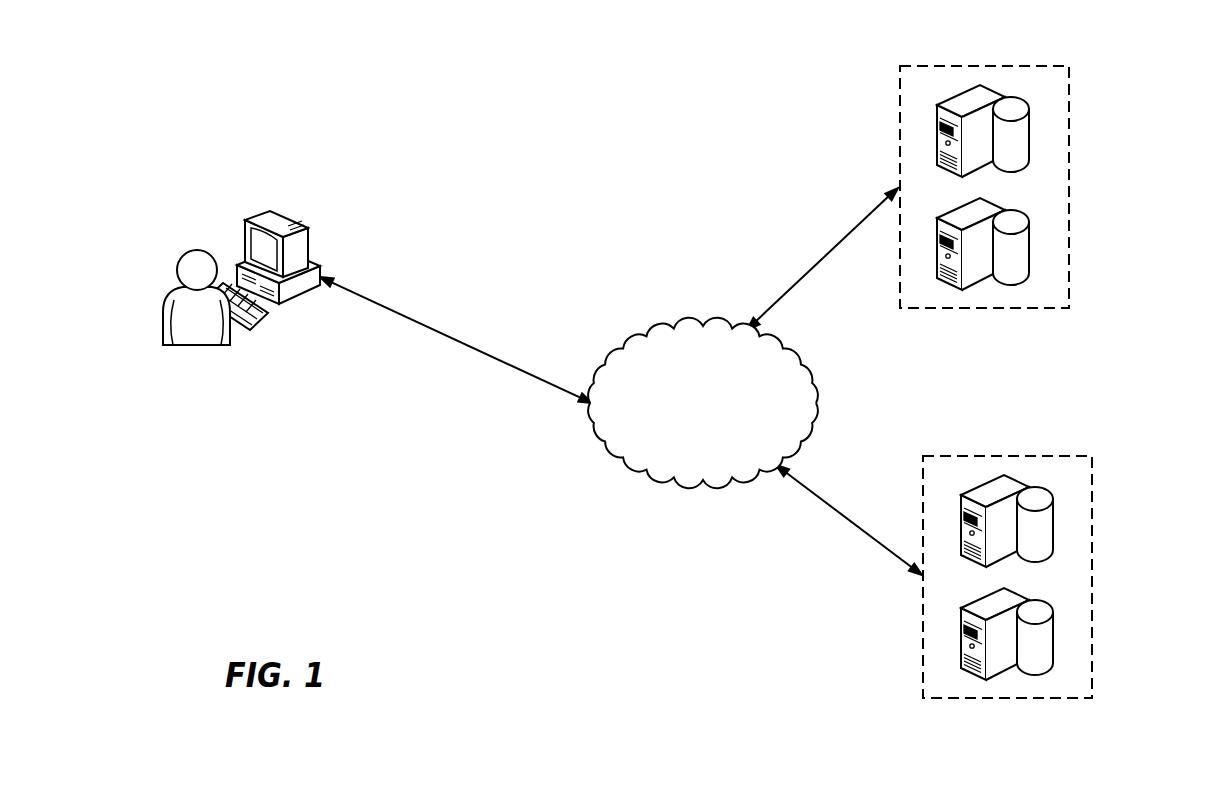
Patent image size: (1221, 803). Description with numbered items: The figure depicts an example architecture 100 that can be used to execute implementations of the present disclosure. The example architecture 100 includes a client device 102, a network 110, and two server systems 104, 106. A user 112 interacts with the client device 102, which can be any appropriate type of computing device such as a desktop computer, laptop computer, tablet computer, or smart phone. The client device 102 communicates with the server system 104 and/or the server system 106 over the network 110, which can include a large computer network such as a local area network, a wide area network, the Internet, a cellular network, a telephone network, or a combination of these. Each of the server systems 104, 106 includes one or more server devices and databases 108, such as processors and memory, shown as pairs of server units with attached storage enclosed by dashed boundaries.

The example architecture 100 is at (556, 92).
The client device 102 is at (245, 225).
The server system 104 is at (1069, 186).
The server system 106 is at (1092, 576).
The server devices and databases 108 is at (937, 128).
The network 110 is at (697, 330).
The user 112 is at (197, 347).